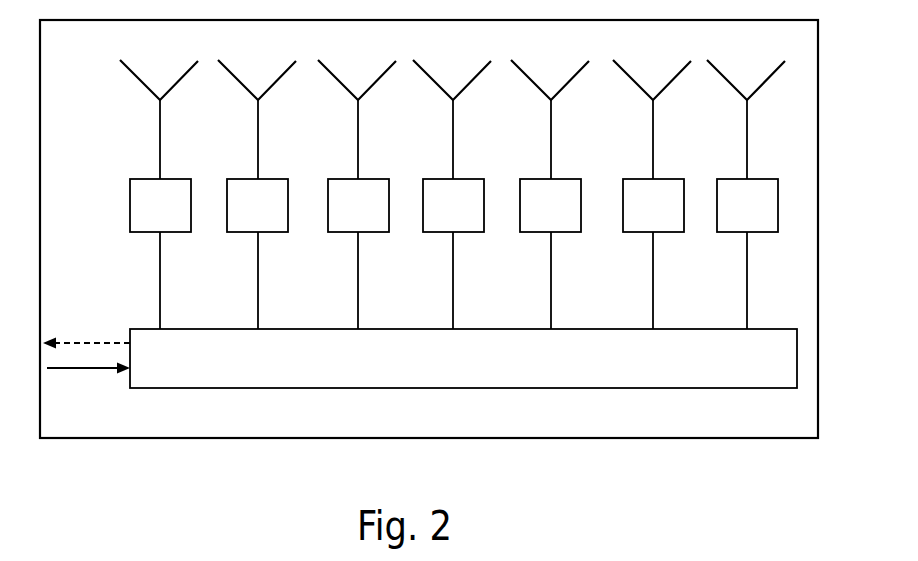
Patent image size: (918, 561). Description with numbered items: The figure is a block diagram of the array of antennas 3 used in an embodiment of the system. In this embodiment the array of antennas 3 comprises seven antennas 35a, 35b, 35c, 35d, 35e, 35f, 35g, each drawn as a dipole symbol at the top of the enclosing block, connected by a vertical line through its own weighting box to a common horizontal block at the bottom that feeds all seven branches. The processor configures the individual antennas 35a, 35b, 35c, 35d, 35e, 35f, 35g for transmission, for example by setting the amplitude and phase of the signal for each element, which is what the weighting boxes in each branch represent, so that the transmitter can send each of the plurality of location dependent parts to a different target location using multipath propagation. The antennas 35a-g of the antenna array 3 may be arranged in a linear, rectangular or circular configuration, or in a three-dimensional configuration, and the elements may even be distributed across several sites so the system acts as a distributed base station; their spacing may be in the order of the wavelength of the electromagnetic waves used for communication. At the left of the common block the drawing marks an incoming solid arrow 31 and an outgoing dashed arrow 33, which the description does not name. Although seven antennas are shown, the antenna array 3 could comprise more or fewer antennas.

The array of antennas 3 is at (148, 438).
The input signal 31 is at (73, 368).
The output signal 33 is at (83, 343).
The antenna 35a is at (160, 284).
The antenna 35b is at (258, 284).
The antenna 35c is at (358, 284).
The antenna 35d is at (453, 284).
The antenna 35e is at (551, 284).
The antenna 35f is at (653, 284).
The antenna 35g is at (747, 284).